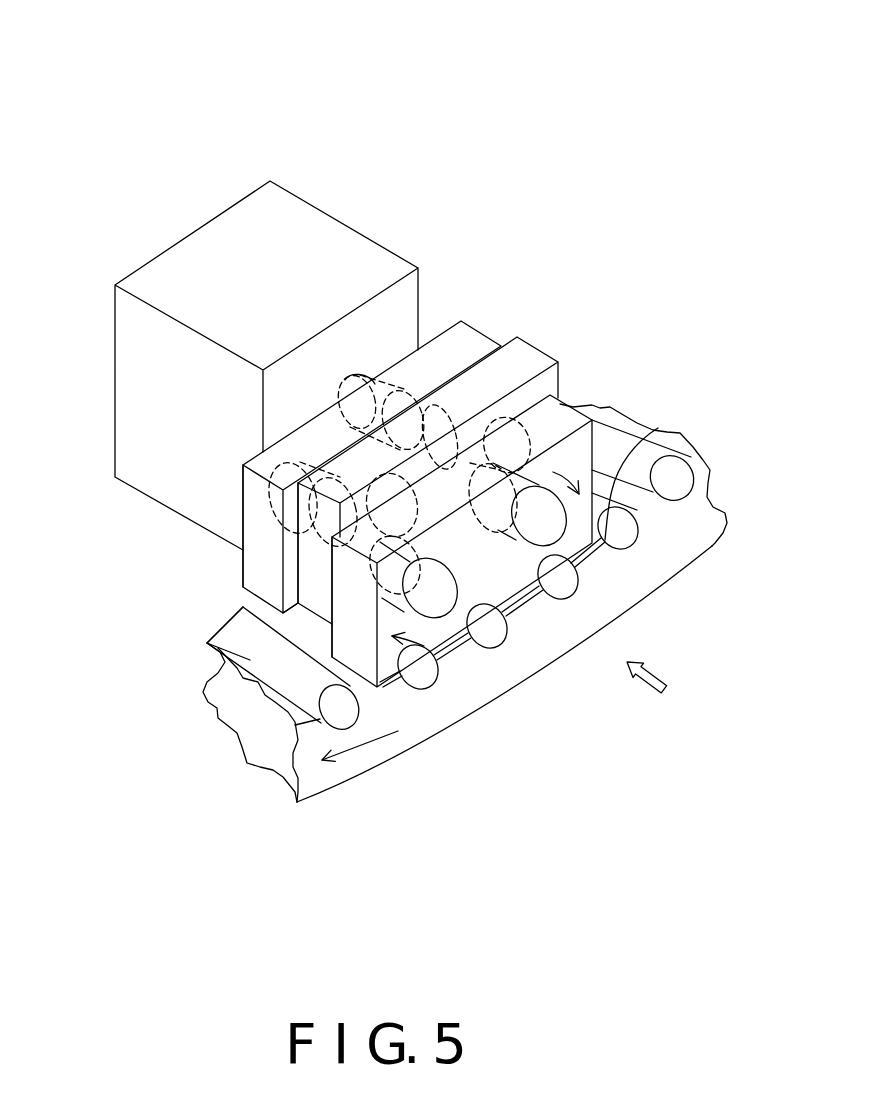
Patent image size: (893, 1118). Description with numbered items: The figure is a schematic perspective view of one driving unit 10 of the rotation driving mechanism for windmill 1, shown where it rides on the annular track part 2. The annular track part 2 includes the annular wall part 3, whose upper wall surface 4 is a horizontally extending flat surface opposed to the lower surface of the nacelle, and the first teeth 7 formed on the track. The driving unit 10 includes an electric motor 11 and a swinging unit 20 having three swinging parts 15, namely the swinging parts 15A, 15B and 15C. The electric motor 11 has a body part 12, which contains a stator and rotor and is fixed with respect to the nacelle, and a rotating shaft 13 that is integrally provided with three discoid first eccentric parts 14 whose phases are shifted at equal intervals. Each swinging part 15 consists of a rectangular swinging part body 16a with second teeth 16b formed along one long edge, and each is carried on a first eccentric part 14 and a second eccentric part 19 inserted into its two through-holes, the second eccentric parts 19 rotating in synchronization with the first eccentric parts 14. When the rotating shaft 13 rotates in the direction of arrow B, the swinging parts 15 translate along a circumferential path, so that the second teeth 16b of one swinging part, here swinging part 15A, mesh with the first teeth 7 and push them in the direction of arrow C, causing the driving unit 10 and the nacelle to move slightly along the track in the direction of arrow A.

The rotation driving mechanism for windmill 1 is at (518, 87).
The annular track part 2 is at (350, 848).
The annular wall part 3 is at (368, 777).
The upper wall surface 4 is at (243, 607).
The first teeth 7 is at (487, 635).
The driving unit 10 is at (567, 170).
The electric motor 11 is at (340, 182).
The body part 12 is at (377, 238).
The rotating shaft 13 is at (426, 372).
The first eccentric part 14 is at (453, 375).
The swinging part 15 is at (480, 334).
The swinging part 15A is at (462, 541).
The swinging part 15B is at (428, 480).
The swinging part 15C is at (372, 467).
The swinging part body 16a is at (250, 520).
The second teeth 16b is at (598, 555).
The second eccentric part 19 is at (310, 557).
The swinging unit 20 is at (586, 334).